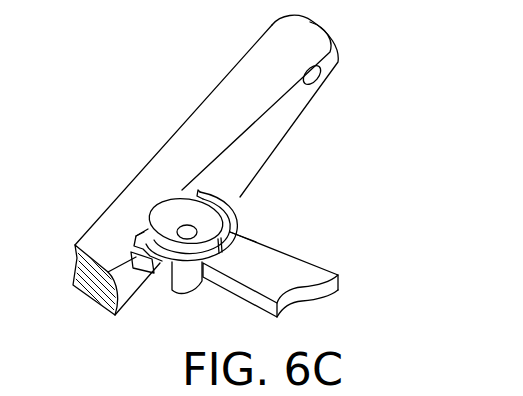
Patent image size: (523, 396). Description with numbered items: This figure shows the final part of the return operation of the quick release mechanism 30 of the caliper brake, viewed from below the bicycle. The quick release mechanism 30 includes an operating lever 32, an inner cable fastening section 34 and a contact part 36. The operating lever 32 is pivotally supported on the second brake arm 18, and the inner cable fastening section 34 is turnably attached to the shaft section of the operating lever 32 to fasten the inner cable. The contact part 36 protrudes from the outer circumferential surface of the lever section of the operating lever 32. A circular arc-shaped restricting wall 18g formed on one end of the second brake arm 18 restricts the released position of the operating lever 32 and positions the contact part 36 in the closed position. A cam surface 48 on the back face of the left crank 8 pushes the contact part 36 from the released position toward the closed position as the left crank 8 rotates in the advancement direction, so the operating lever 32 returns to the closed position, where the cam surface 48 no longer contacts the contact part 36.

The left crank 8 is at (213, 118).
The operating lever 32 is at (169, 218).
The quick release mechanism 30 is at (240, 198).
The second brake arm 18 is at (311, 268).
The restricting wall 18g is at (235, 217).
The contact part 36 is at (146, 229).
The cam surface 48 is at (148, 259).
The inner cable fastening section 34 is at (197, 291).